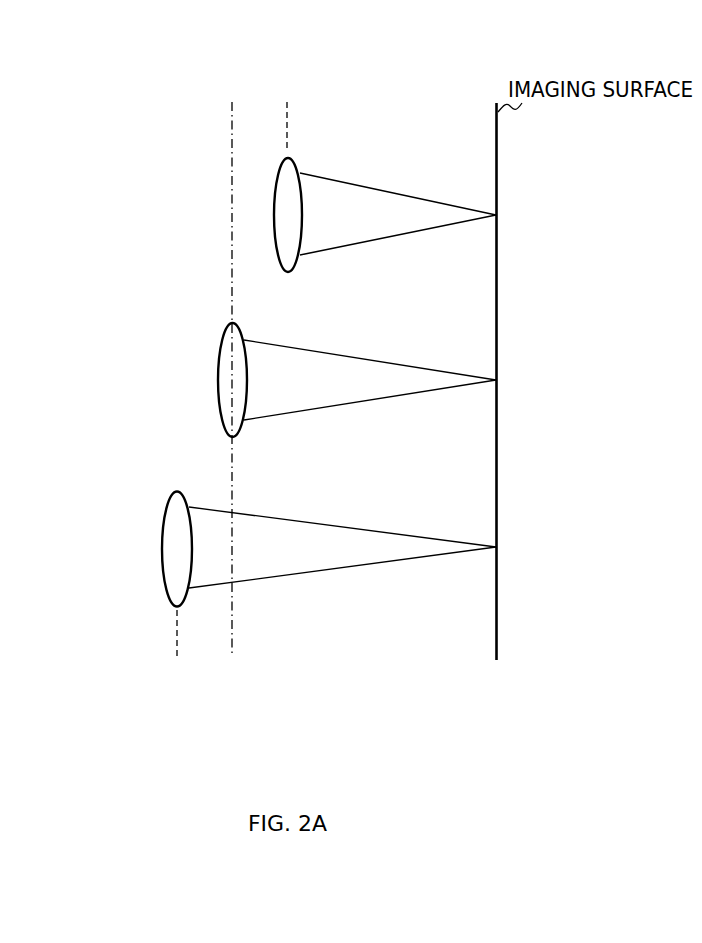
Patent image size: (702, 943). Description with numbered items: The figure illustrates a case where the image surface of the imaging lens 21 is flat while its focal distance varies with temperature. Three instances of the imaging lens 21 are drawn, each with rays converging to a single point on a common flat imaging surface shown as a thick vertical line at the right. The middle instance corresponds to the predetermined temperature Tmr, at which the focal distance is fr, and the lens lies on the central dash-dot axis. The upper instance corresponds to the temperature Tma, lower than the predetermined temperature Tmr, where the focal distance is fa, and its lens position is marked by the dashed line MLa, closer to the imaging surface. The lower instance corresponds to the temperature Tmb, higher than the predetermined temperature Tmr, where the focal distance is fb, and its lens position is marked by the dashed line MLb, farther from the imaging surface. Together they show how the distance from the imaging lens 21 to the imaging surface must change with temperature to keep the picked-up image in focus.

The imaging lens 21 is at (290, 160).
The temperature Tma is at (279, 214).
The predetermined temperature Tmr is at (279, 380).
The temperature Tmb is at (279, 547).
The lens position line a MLa is at (264, 115).
The lens position line b MLb is at (197, 643).